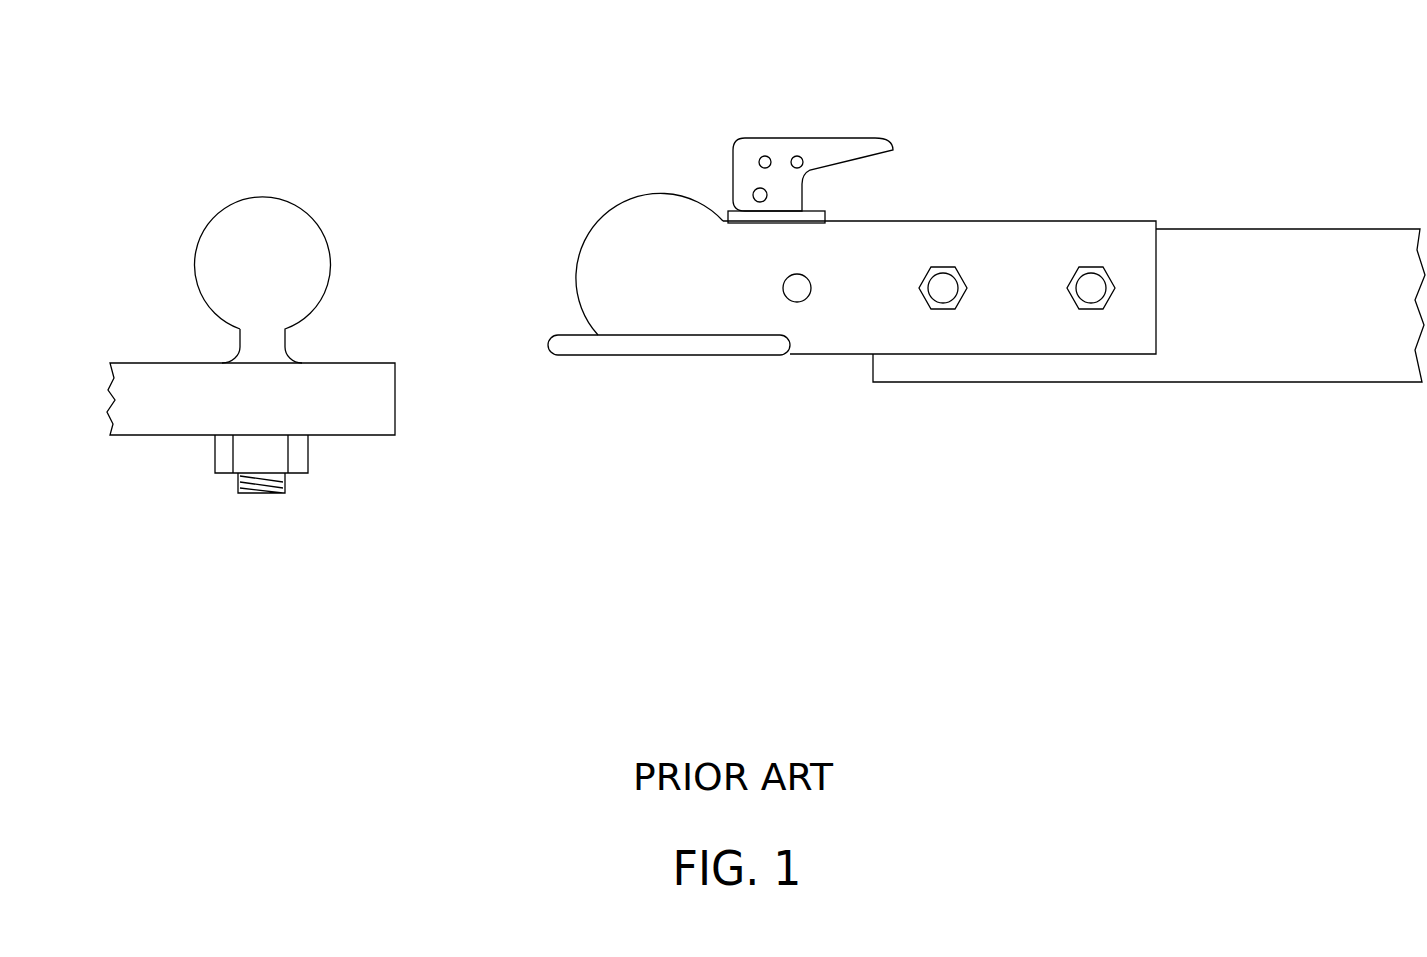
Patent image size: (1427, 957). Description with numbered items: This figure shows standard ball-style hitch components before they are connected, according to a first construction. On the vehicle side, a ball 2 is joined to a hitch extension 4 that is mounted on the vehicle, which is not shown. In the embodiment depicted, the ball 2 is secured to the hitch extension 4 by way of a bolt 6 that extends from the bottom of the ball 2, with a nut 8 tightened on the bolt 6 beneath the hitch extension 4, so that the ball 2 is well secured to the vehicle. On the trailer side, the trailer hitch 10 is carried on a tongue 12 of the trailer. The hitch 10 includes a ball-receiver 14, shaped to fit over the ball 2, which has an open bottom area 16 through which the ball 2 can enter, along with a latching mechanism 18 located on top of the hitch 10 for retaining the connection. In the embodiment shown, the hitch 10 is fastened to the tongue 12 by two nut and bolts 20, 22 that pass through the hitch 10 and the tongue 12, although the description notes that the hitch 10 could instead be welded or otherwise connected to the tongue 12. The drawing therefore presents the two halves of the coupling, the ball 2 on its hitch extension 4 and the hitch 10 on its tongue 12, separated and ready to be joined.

The ball 2 is at (263, 270).
The hitch extension 4 is at (332, 410).
The bolt 6 is at (250, 490).
The nut 8 is at (268, 452).
The trailer hitch 10 is at (1003, 163).
The tongue 12 is at (1235, 307).
The ball-receiver 14 is at (617, 250).
The open bottom area 16 is at (687, 348).
The latching mechanism 18 is at (787, 153).
The nut and bolt 20 is at (945, 290).
The nut and bolt 22 is at (1092, 290).